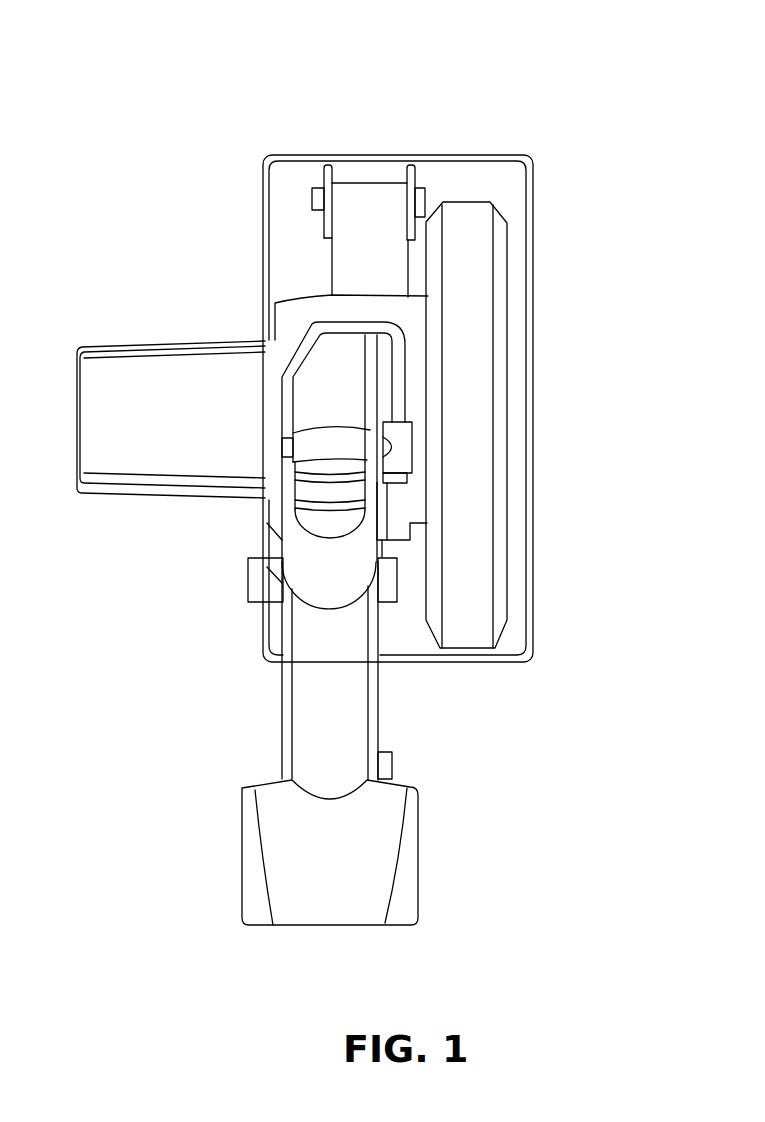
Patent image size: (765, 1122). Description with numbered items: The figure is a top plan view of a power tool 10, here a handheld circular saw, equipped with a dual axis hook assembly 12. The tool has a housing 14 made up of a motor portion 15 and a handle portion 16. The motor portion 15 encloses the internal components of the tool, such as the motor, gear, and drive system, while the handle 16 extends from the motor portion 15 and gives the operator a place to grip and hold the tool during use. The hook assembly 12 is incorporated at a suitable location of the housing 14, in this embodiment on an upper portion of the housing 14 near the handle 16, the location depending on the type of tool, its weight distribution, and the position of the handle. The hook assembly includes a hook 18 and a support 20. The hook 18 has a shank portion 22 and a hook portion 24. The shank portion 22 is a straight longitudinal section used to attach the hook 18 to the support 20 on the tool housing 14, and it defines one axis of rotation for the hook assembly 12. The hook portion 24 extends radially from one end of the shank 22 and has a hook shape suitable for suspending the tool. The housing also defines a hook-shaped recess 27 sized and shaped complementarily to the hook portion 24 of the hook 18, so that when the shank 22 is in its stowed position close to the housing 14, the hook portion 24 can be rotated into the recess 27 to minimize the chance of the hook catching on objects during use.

The power tool 10 is at (184, 58).
The dual axis hook assembly 12 is at (430, 395).
The housing 14 is at (243, 664).
The motor portion 15 is at (116, 333).
The handle portion 16 is at (369, 719).
The hook 18 is at (266, 348).
The support 20 is at (431, 459).
The shank portion 22 is at (406, 420).
The hook portion 24 is at (290, 337).
The hook-shaped recess 27 is at (354, 308).